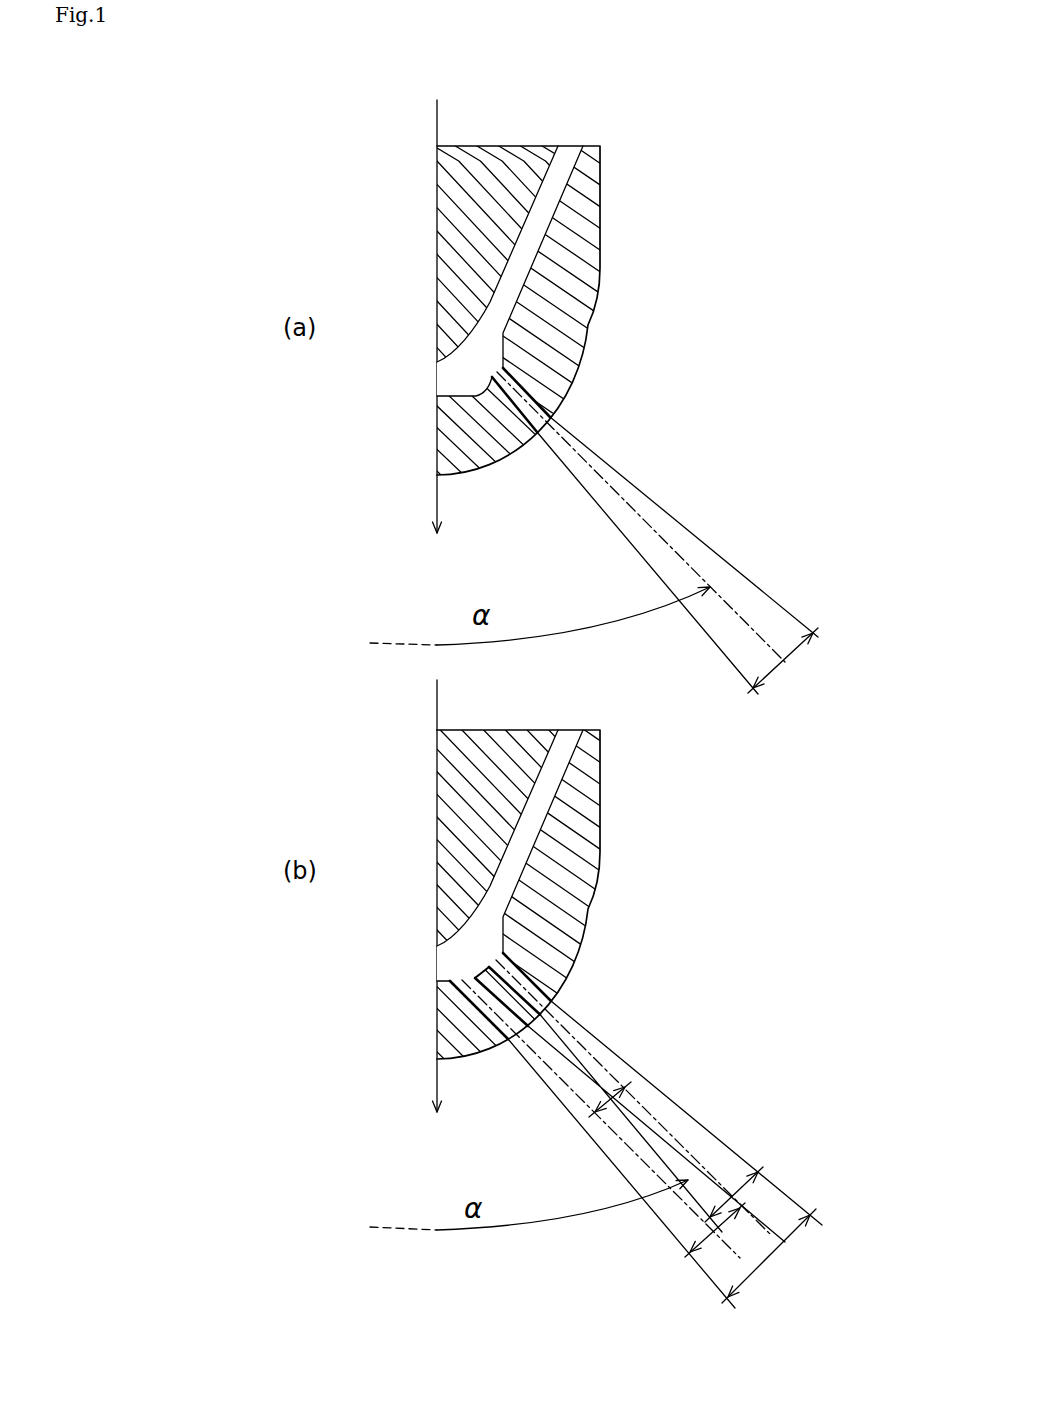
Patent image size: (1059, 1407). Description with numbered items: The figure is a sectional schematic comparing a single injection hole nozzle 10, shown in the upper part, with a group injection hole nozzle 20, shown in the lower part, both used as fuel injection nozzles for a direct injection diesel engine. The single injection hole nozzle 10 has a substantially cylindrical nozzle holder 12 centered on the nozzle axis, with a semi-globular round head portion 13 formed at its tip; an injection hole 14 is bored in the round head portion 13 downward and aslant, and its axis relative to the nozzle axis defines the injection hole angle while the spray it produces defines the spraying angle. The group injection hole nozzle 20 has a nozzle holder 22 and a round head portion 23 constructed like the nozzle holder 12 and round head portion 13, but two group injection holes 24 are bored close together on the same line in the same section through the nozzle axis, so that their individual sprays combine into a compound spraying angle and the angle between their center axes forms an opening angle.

The single injection hole nozzle 10 is at (558, 320).
The nozzle holder 12 is at (548, 281).
The round head portion 13 is at (587, 360).
The injection hole 14 is at (555, 419).
The group injection hole nozzle 20 is at (566, 907).
The nozzle holder 22 is at (548, 867).
The round head portion 23 is at (587, 949).
The group injection holes 24 is at (538, 995).